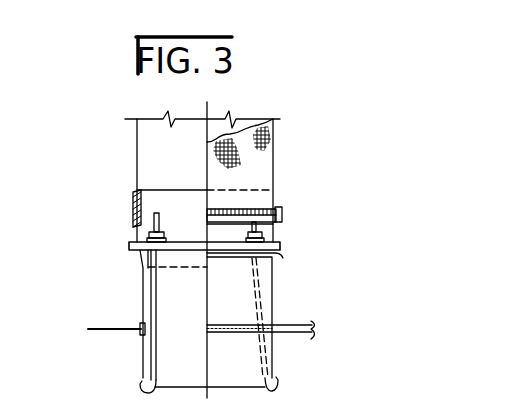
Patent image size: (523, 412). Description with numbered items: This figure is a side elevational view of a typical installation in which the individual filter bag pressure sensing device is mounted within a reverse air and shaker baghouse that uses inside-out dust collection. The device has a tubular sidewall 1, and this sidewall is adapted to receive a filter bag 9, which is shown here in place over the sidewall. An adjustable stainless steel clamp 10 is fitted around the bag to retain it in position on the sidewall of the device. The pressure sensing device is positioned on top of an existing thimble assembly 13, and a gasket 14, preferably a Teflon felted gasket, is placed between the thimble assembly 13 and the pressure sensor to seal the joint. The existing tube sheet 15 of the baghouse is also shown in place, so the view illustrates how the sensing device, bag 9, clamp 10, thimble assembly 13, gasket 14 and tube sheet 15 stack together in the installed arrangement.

The tubular sidewall 1 is at (147, 230).
The filter bag 9 is at (273, 140).
The adjustable stainless steel clamp 10 is at (248, 208).
The thimble assembly 13 is at (273, 292).
The gasket 14 is at (283, 258).
The tube sheet 15 is at (297, 325).